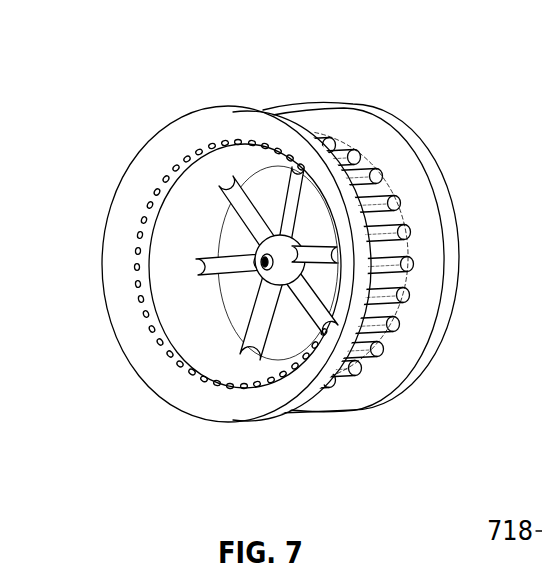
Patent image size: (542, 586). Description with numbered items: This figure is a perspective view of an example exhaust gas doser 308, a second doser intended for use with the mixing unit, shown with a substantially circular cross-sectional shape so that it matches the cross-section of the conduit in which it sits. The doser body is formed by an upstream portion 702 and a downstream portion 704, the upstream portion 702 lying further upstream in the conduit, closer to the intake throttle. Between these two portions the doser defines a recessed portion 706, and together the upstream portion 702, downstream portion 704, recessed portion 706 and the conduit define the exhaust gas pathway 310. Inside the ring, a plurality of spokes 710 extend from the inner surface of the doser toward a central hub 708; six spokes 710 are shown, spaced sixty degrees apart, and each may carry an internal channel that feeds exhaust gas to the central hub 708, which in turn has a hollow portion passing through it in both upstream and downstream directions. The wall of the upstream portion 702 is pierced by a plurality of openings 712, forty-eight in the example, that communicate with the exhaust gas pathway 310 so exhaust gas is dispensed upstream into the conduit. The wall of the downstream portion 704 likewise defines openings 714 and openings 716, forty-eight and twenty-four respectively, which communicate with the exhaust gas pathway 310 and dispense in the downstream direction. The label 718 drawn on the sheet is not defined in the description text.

The exhaust gas doser 308 is at (142, 62).
The exhaust gas pathway 310 is at (402, 233).
The upstream portion 702 is at (236, 311).
The downstream portion 704 is at (437, 184).
The recessed portion 706 is at (384, 340).
The central hub 708 is at (296, 236).
The spokes 710 is at (257, 263).
The openings 712 is at (217, 400).
The openings 714 is at (404, 298).
The openings 716 is at (408, 234).
The handle spoke 718 is at (253, 257).